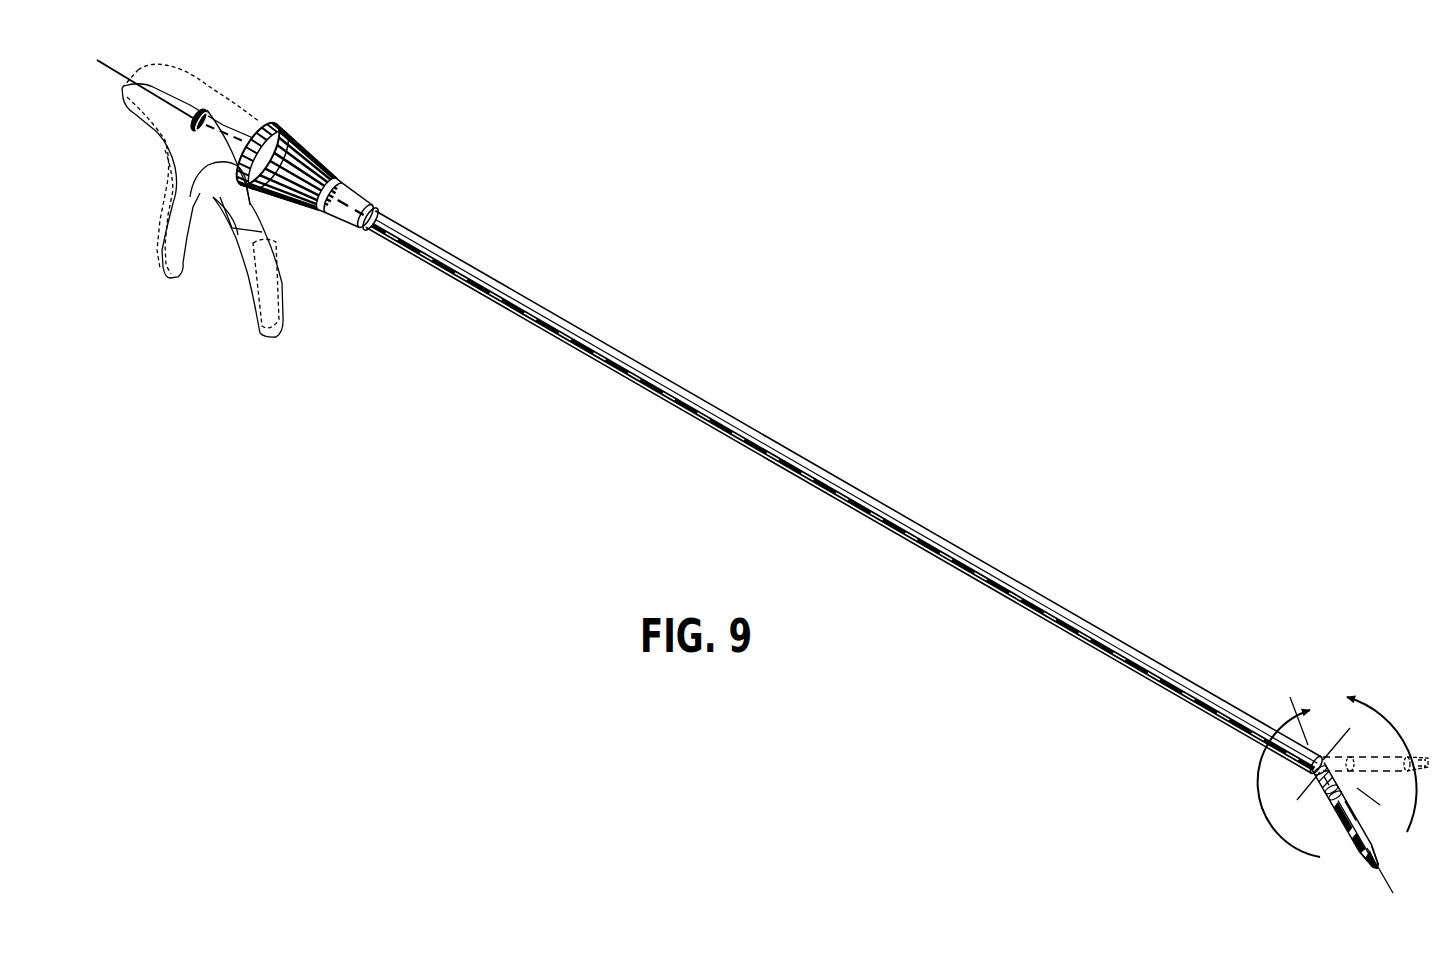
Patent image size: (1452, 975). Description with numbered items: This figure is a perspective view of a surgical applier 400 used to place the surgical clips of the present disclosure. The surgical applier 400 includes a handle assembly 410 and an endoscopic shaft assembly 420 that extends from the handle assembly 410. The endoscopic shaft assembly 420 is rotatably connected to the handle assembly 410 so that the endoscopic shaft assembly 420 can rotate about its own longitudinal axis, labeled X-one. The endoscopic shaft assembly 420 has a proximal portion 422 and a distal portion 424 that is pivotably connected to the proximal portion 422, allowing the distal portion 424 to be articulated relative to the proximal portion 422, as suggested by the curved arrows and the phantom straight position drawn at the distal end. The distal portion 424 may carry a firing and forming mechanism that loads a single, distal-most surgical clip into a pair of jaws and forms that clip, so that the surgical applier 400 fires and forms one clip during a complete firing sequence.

The surgical applier 400 is at (917, 462).
The handle assembly 410 is at (238, 100).
The endoscopic shaft assembly 420 is at (425, 233).
The proximal portion 422 is at (510, 285).
The distal portion 424 is at (1374, 833).